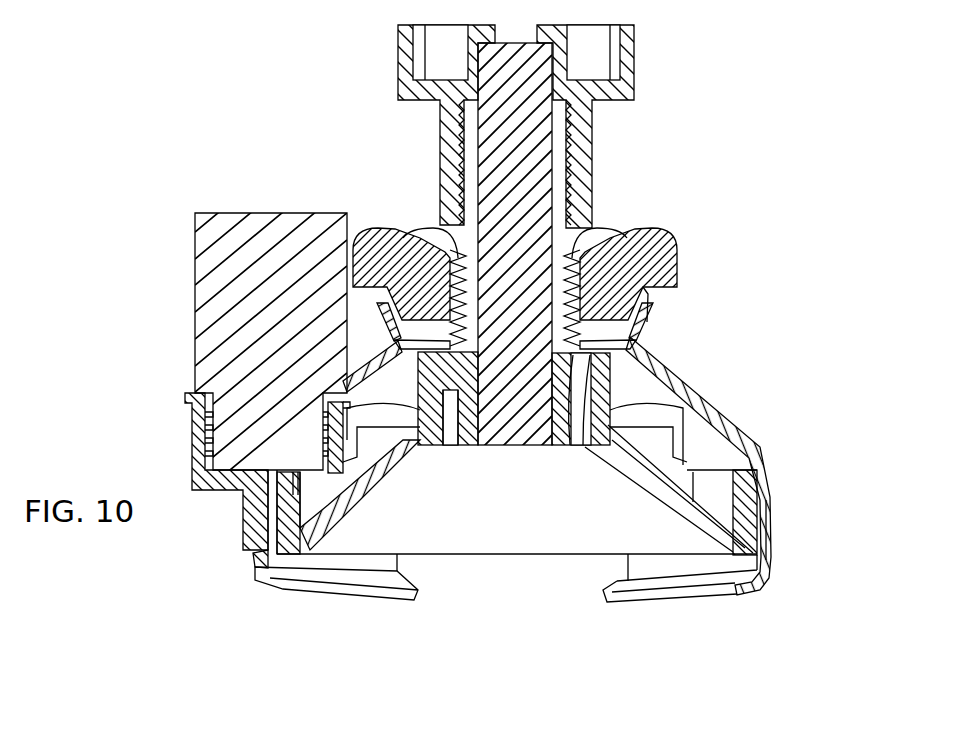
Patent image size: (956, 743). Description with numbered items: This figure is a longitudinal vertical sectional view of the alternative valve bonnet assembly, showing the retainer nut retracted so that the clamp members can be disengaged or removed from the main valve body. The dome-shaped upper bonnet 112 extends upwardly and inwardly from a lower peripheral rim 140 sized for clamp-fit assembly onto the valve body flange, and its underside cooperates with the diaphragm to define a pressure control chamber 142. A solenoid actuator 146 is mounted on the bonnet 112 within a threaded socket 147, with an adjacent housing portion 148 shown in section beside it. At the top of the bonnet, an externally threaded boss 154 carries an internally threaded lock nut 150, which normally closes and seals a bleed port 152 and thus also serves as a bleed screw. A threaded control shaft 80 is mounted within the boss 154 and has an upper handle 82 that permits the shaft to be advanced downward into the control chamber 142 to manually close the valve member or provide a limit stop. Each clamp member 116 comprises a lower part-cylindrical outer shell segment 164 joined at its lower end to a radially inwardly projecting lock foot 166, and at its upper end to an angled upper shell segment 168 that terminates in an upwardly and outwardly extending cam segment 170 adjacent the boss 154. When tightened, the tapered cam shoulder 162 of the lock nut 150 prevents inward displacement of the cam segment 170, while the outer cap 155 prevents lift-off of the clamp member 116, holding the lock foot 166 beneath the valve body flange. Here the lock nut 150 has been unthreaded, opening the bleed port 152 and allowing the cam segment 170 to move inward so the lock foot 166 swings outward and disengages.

The upper handle 82 is at (637, 48).
The control shaft 80 is at (520, 440).
The threaded boss 154 is at (440, 240).
The outer cap 155 is at (678, 275).
The lock nut 150 is at (562, 268).
The cam shoulder 162 is at (648, 294).
The cam segment 170 is at (652, 331).
The upper shell segment 168 is at (678, 367).
The clamp member 116 is at (724, 412).
The outer shell segment 164 is at (770, 530).
The upper bonnet 112 is at (367, 498).
The bleed port 152 is at (582, 450).
The pressure control chamber 142 is at (539, 523).
The lower peripheral rim 140 is at (740, 492).
The lock foot 166 is at (715, 598).
The solenoid actuator 146 is at (193, 278).
The threaded socket 147 is at (205, 441).
The housing 148 is at (337, 530).